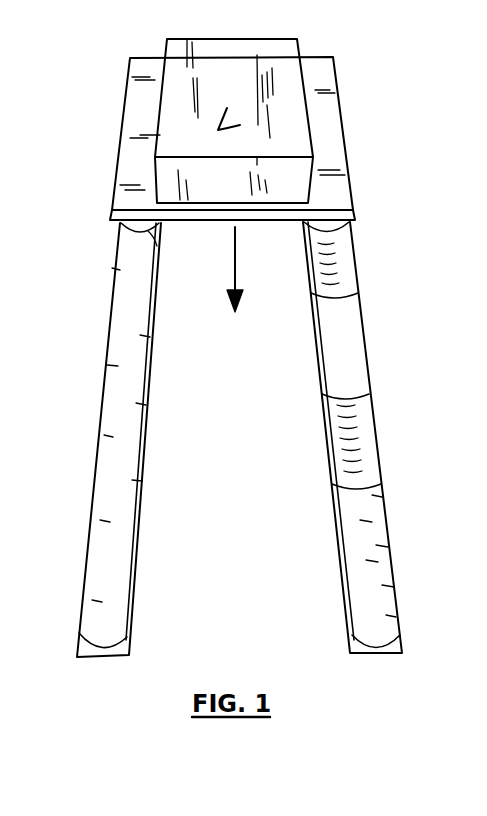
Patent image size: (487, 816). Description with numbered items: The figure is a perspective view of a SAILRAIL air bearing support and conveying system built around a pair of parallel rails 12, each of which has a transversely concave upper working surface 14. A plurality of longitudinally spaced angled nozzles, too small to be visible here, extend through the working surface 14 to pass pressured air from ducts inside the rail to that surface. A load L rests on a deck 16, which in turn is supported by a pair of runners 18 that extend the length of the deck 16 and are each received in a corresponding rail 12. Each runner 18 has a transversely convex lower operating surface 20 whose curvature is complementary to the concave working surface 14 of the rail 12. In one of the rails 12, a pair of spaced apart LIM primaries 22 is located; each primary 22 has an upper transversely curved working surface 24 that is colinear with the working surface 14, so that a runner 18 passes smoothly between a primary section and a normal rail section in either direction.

The rail 12 is at (241, 430).
The working surface 14 is at (123, 541).
The deck 16 is at (340, 163).
The runner 18 is at (112, 233).
The lower operating surface 20 is at (137, 235).
The LIM primary 22 is at (349, 366).
The working surface 24 is at (340, 277).